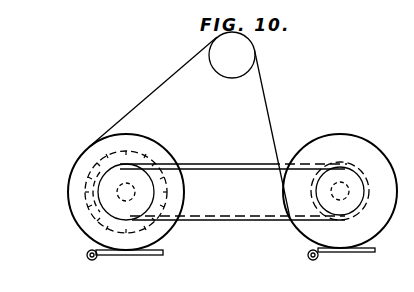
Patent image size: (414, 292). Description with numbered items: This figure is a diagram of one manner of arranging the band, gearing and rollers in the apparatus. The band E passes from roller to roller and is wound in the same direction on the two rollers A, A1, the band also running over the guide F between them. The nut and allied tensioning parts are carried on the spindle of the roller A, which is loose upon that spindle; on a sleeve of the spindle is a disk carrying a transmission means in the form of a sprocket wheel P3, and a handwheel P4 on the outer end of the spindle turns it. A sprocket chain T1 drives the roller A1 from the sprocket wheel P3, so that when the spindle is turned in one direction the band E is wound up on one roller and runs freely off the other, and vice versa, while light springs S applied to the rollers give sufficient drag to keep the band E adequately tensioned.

The guide pulley F is at (232, 55).
The band E is at (155, 92).
The roller A is at (100, 153).
The roller A1 is at (340, 191).
The sprocket wheel P3 is at (97, 186).
The handwheel P4 is at (97, 220).
The sprocket chain T1 is at (240, 163).
The light spring S is at (128, 254).